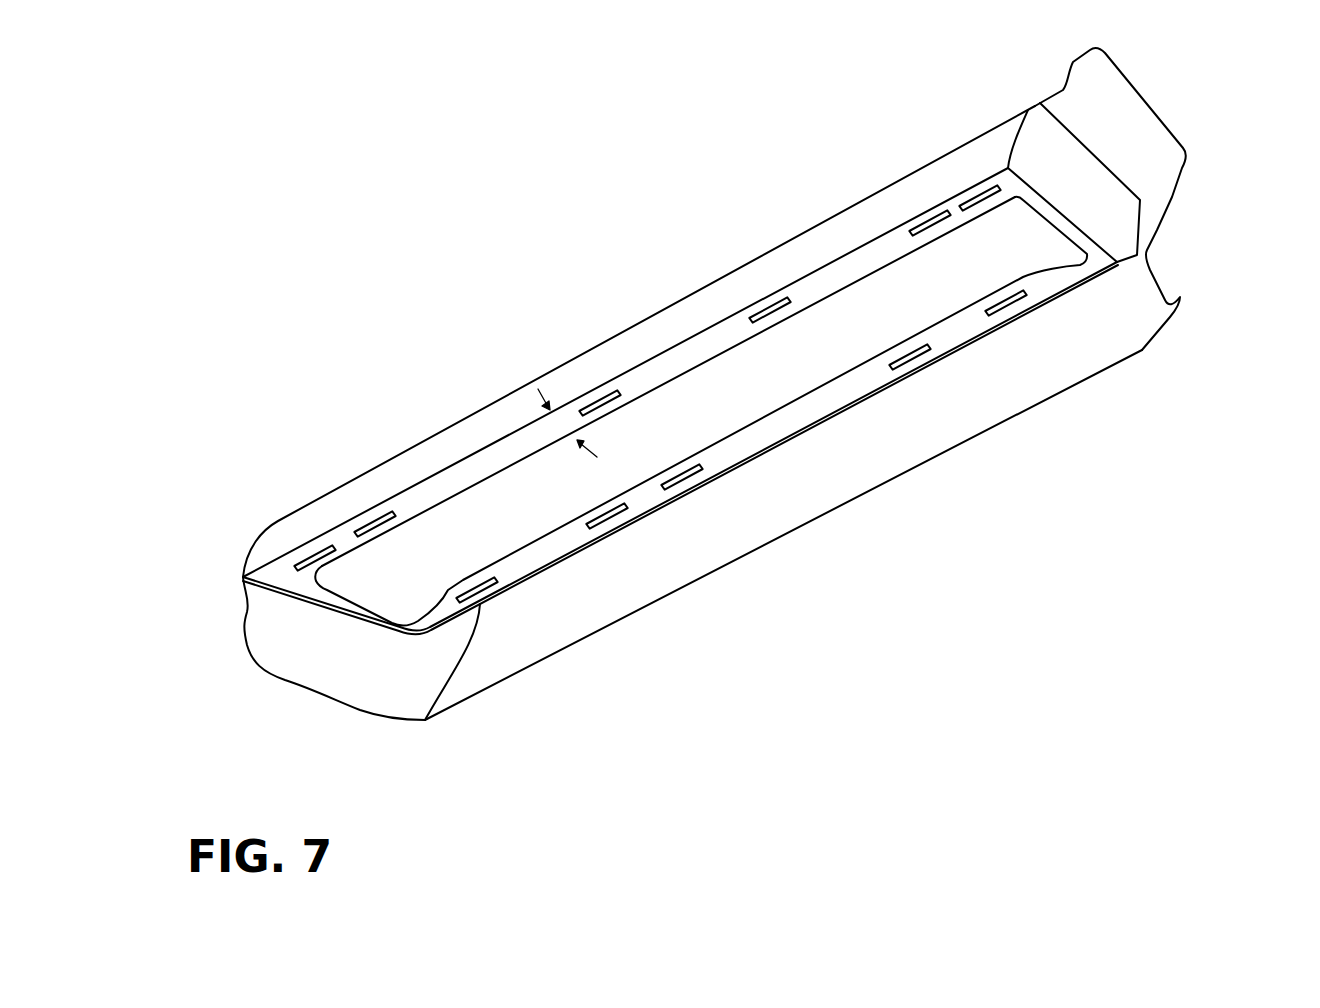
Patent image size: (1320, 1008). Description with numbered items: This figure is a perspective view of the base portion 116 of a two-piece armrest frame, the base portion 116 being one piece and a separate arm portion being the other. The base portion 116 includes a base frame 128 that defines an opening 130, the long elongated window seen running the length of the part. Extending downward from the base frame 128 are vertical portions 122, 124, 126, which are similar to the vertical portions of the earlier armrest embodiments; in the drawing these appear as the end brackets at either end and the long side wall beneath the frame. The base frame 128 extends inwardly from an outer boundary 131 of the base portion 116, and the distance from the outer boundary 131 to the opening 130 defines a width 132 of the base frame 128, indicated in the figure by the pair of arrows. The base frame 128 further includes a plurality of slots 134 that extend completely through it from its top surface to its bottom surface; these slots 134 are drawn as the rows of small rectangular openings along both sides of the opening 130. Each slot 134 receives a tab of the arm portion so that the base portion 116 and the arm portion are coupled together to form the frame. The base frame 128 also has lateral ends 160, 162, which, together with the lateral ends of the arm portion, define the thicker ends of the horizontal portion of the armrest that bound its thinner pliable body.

The base portion 116 is at (493, 256).
The vertical portion 122 is at (271, 521).
The vertical portion 124 is at (1170, 203).
The vertical portion 126 is at (740, 560).
The base frame 128 is at (497, 462).
The opening 130 is at (717, 397).
The outer boundary 131 is at (418, 483).
The width 132 is at (538, 389).
The slots 134 is at (785, 317).
The lateral end 160 is at (830, 276).
The lateral end 162 is at (1040, 288).